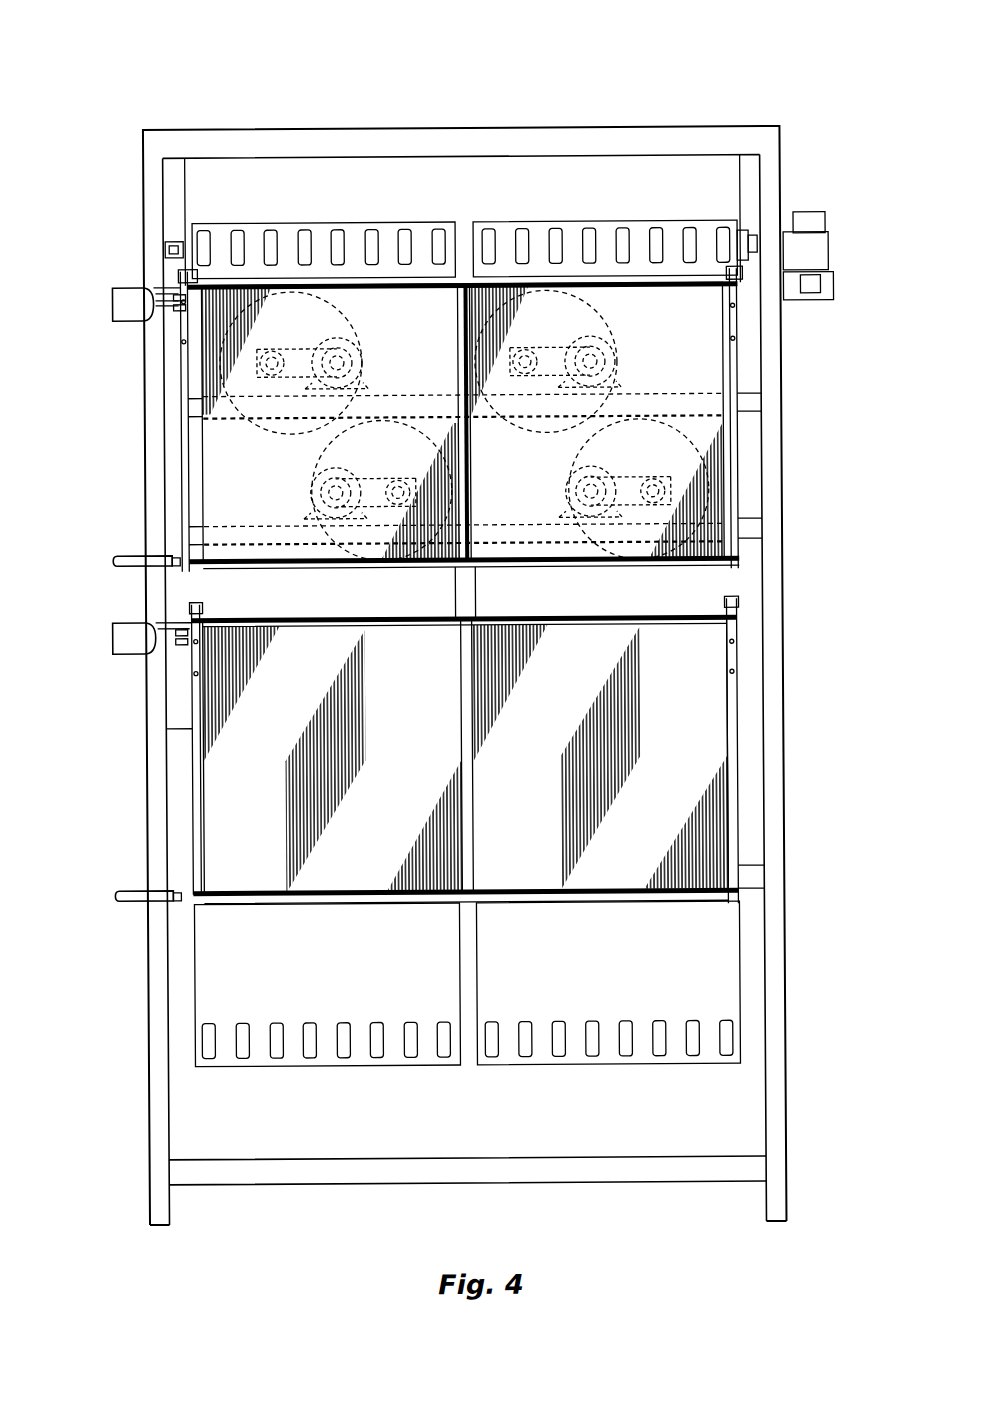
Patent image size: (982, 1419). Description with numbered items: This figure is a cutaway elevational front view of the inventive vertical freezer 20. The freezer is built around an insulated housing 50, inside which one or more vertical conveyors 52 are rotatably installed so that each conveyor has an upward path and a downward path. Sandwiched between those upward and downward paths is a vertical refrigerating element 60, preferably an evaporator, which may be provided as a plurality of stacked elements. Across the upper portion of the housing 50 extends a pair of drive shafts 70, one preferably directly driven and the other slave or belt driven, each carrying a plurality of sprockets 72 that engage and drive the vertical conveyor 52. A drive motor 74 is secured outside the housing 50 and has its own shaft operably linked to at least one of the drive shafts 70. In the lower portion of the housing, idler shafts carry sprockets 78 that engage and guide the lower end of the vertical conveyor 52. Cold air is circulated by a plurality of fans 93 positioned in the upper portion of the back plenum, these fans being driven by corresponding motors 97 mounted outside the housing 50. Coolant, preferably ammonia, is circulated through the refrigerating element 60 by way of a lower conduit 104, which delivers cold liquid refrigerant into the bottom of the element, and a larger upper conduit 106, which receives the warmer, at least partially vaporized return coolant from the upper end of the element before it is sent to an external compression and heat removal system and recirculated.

The vertical freezer 20 is at (314, 112).
The insulated housing 50 is at (779, 722).
The vertical conveyor 52 is at (215, 742).
The vertical refrigerating element 60 is at (252, 423).
The drive shaft 70 is at (170, 242).
The sprocket 72 is at (300, 227).
The drive motor 74 is at (834, 252).
The sprocket 78 is at (308, 1060).
The fan 93 is at (325, 320).
The motor 97 is at (365, 358).
The lower conduit 104 is at (122, 553).
The upper conduit 106 is at (124, 296).